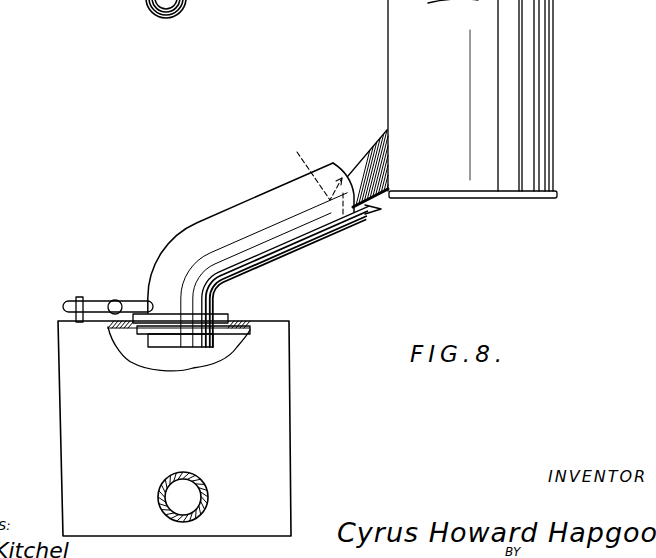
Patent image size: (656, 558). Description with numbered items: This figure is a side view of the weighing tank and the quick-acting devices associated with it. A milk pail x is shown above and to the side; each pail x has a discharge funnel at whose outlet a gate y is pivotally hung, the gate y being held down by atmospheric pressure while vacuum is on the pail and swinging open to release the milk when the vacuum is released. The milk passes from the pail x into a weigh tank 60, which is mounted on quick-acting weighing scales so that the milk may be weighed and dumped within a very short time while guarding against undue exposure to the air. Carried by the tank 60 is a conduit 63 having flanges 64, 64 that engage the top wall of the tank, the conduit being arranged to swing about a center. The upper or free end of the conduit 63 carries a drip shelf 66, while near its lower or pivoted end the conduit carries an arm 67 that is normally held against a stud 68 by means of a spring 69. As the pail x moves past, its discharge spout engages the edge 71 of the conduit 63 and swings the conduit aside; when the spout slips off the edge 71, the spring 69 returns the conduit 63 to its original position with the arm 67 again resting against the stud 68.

The weigh tank 60 is at (290, 342).
The conduit 63 is at (233, 210).
The flanges 64 is at (223, 314).
The drip shelf 66 is at (381, 209).
The arm 67 is at (65, 302).
The stud 68 is at (75, 314).
The spring 69 is at (116, 300).
The opposite edge of the conduit 71 is at (352, 177).
The milk pail x is at (553, 64).
The gate y is at (311, 176).